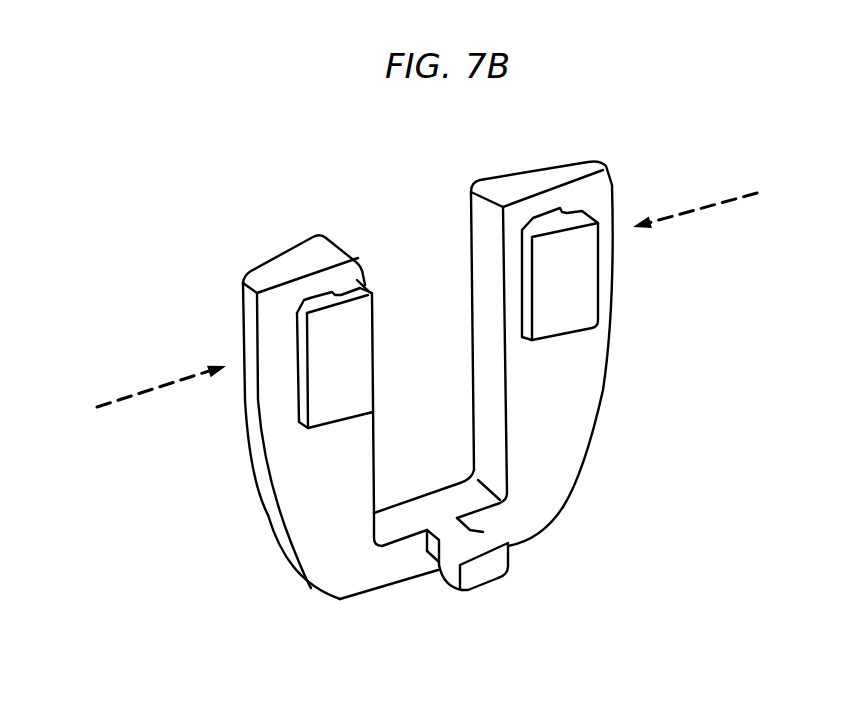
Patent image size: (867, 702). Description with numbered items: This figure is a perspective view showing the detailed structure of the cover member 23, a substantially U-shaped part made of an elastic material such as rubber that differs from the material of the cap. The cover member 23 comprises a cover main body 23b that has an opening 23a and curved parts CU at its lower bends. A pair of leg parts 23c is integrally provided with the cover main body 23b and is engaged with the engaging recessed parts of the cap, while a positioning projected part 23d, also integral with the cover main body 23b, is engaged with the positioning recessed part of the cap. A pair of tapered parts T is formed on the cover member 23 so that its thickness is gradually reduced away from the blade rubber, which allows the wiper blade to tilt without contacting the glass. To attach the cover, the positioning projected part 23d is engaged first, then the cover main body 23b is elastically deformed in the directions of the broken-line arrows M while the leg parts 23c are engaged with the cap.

The cover member 23 is at (228, 305).
The opening 23a is at (488, 313).
The cover main body 23b is at (327, 530).
The leg parts 23c is at (342, 364).
The positioning projected part 23d is at (476, 548).
The tapered parts T is at (262, 266).
The broken-line arrows M is at (427, 294).
The curved parts CU is at (315, 589).